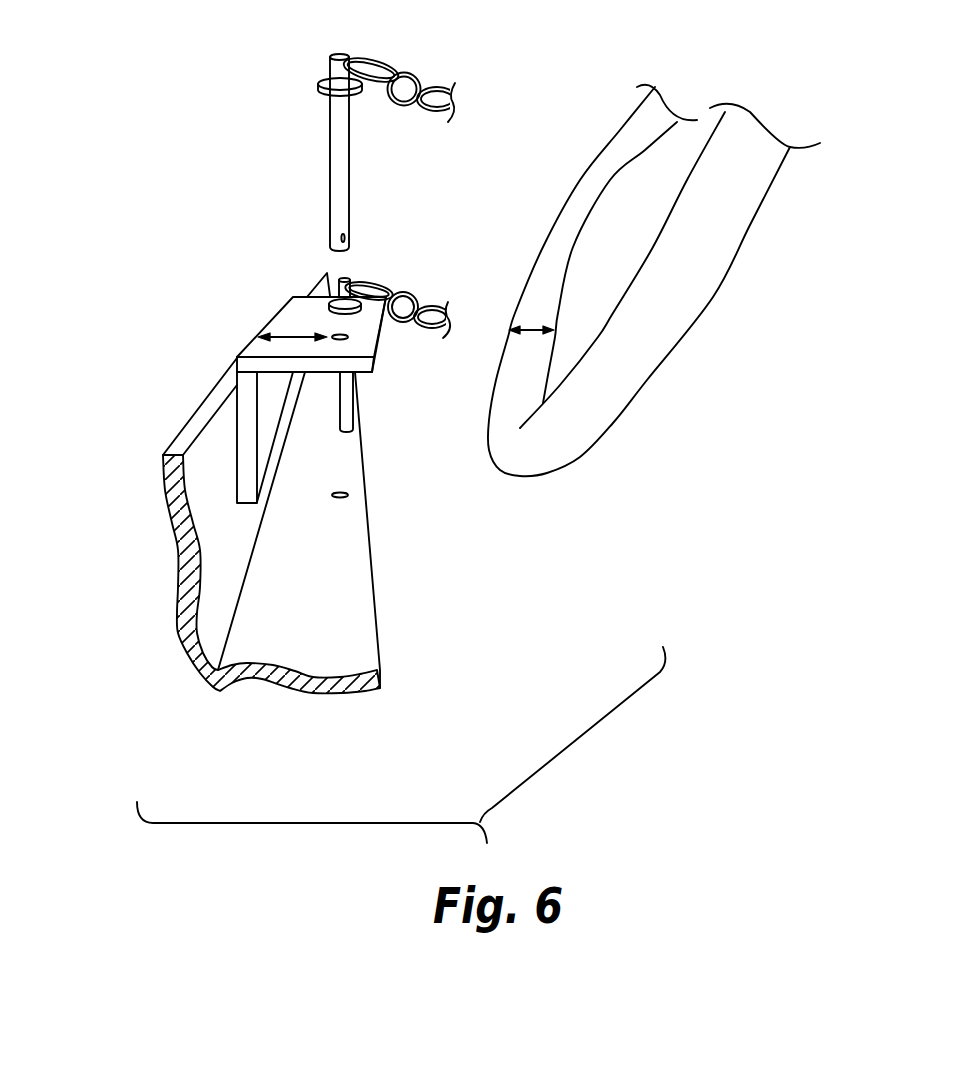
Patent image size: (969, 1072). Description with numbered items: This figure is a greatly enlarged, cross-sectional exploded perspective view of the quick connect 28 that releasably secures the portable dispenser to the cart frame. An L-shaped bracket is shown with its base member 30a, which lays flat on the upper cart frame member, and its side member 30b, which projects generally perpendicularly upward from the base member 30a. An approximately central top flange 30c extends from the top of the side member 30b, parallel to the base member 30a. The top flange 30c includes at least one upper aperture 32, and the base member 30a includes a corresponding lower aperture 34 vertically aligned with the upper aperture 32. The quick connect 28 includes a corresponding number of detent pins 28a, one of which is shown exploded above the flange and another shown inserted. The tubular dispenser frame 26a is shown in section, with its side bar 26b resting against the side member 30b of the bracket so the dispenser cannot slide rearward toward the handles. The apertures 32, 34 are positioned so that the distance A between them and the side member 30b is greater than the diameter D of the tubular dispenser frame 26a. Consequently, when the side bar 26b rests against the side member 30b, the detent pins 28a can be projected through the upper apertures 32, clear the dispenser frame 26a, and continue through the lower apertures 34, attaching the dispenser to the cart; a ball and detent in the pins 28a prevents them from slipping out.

The tubular dispenser frame 26a is at (685, 287).
The side bar 26b is at (520, 372).
The quick connect 28 is at (352, 228).
The detent pins 28a is at (341, 147).
The base member 30a is at (347, 637).
The side member 30b is at (185, 563).
The top flange 30c is at (300, 313).
The upper apertures 32 is at (348, 335).
The lower apertures 34 is at (350, 492).
The distance A is at (288, 335).
The diameter D is at (532, 328).